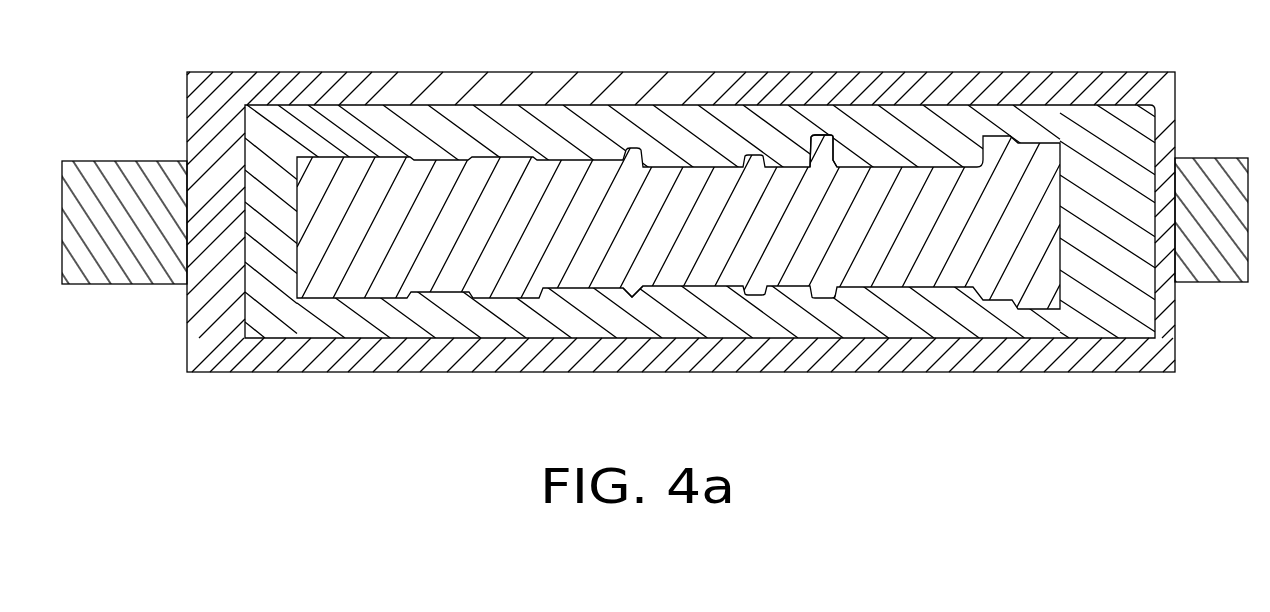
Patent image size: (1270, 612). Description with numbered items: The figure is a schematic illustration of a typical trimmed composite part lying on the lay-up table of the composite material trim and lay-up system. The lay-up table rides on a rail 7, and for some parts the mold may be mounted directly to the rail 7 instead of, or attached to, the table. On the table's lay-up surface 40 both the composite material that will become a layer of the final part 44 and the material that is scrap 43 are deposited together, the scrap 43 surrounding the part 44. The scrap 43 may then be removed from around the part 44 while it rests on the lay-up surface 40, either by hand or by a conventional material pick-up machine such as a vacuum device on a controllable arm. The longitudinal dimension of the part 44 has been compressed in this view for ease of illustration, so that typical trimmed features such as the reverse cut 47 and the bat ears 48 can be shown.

The rail 7 is at (1197, 157).
The lay-up surface 40 is at (265, 72).
The scrap 43 is at (587, 145).
The part 44 is at (750, 234).
The reverse cut 47 is at (813, 135).
The bat ears 48 is at (620, 292).